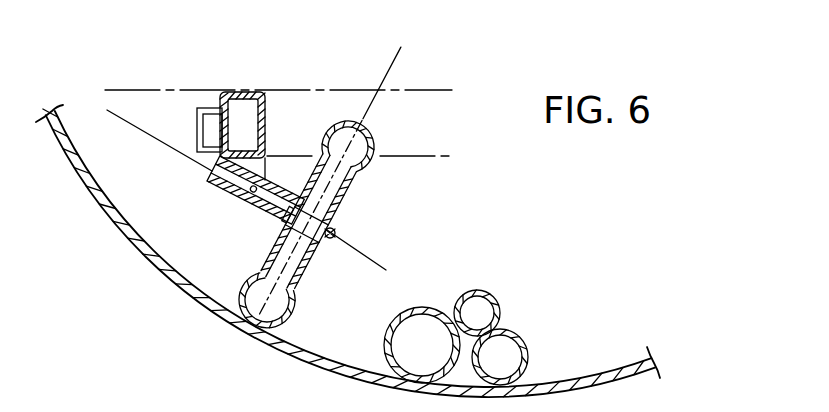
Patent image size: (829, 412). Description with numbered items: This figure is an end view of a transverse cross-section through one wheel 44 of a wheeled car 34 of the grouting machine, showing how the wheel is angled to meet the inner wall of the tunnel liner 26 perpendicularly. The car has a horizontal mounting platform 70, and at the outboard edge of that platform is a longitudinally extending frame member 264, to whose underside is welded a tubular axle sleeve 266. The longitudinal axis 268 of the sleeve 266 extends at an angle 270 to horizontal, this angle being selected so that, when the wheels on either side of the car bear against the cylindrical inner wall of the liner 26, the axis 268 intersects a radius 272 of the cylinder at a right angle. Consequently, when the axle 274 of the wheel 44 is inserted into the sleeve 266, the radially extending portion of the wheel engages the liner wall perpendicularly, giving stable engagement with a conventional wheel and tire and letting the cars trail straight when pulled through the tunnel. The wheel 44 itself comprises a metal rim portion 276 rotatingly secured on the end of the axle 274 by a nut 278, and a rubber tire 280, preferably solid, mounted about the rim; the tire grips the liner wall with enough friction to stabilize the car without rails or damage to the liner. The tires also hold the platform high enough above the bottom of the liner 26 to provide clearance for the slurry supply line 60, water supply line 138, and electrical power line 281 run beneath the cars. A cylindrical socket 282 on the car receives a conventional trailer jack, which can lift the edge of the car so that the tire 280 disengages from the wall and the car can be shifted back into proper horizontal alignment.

The tunnel liner 26 is at (147, 257).
The wheeled car 34 is at (441, 86).
The wheel 44 is at (384, 142).
The slurry supply line 60 is at (404, 311).
The mounting platform 70 is at (420, 160).
The water supply line 138 is at (523, 333).
The frame member 264 is at (240, 91).
The tubular axle sleeve 266 is at (243, 194).
The longitudinal axis 268 is at (386, 266).
The angle 270 is at (152, 148).
The radius 272 is at (380, 78).
The axle 274 is at (280, 233).
The metal rim portion 276 is at (342, 199).
The nut 278 is at (338, 230).
The rubber tire 280 is at (296, 316).
The electrical power line 281 is at (492, 290).
The cylindrical socket 282 is at (192, 123).